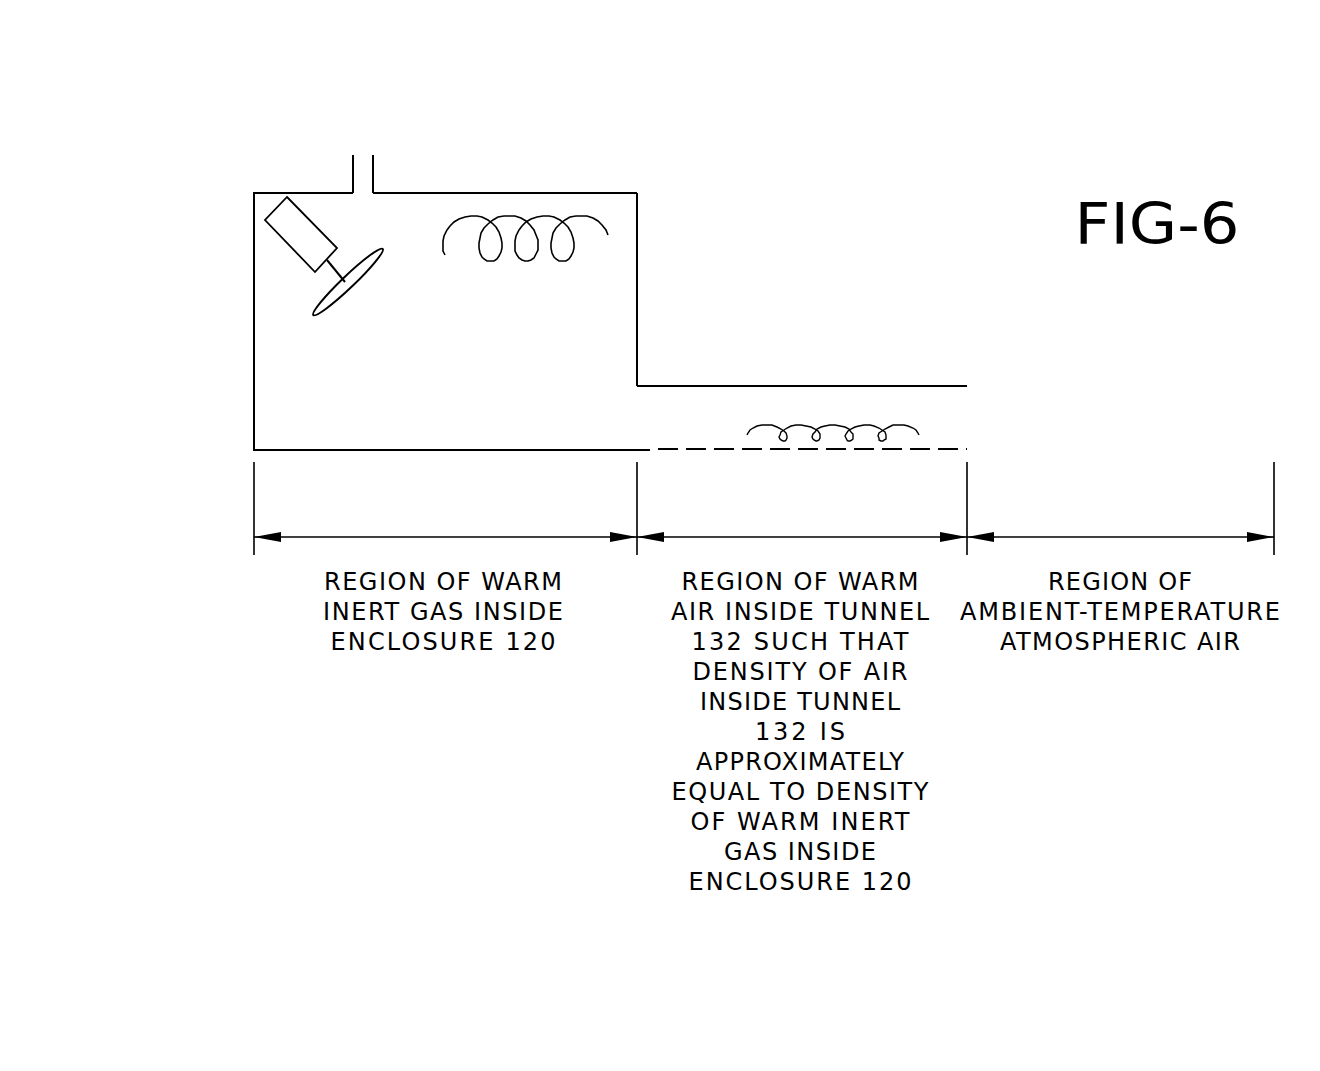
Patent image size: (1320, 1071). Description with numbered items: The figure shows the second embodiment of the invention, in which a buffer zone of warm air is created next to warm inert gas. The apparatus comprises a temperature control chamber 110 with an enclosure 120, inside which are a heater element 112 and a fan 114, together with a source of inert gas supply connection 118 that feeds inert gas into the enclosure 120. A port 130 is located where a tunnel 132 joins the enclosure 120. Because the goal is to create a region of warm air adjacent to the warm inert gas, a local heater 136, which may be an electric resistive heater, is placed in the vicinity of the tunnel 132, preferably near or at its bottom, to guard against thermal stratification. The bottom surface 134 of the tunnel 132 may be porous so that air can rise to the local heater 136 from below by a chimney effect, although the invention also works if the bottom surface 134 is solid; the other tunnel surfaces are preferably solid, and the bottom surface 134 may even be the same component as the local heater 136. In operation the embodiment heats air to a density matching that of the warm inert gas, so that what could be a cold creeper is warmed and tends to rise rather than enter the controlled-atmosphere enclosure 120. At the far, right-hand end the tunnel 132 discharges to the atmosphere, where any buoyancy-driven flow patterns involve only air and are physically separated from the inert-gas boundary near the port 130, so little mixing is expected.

The temperature control chamber 110 is at (582, 146).
The heater element 112 is at (497, 215).
The fan 114 is at (320, 308).
The source of inert gas supply connection 118 is at (363, 171).
The enclosure 120 is at (617, 192).
The port 130 is at (640, 385).
The tunnel 132 is at (727, 386).
The bottom surface 134 is at (923, 449).
The local heater 136 is at (876, 428).